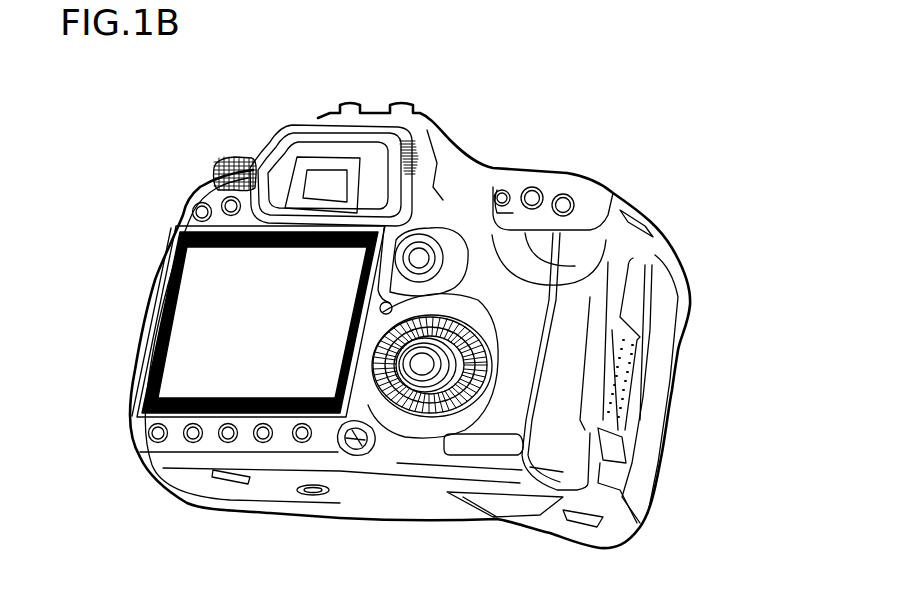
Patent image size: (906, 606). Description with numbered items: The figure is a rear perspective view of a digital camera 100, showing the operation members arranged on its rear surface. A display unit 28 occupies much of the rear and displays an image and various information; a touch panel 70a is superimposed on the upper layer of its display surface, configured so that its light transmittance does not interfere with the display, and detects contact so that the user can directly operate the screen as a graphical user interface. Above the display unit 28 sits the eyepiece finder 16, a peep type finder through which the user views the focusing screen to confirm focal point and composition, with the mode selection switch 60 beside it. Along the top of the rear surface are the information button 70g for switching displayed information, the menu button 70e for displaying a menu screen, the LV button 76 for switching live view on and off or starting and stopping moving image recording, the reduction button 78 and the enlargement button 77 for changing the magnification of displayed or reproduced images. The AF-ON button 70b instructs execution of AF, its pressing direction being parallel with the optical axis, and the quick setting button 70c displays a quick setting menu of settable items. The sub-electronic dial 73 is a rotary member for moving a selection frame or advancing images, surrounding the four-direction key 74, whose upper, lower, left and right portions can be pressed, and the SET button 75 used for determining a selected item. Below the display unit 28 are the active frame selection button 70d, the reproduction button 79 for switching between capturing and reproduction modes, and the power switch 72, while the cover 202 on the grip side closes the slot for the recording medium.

The digital camera 100 is at (690, 123).
The eyepiece finder 16 is at (330, 192).
The mode selection switch 60 is at (233, 160).
The information button 70g is at (230, 203).
The menu button 70e is at (198, 208).
The AF-ON button 70b is at (416, 244).
The LV button 76 is at (503, 191).
The reduction button 78 is at (533, 191).
The enlargement button 77 is at (566, 199).
The quick setting button 70c is at (393, 303).
The display unit 28 is at (222, 321).
The touch panel 70a is at (187, 317).
The sub-electronic dial 73 is at (413, 405).
The four-direction key 74 is at (421, 393).
The SET button 75 is at (426, 370).
The active frame selection button 70d is at (232, 443).
The reproduction button 79 is at (304, 443).
The power switch 72 is at (357, 452).
The cover 202 is at (597, 360).